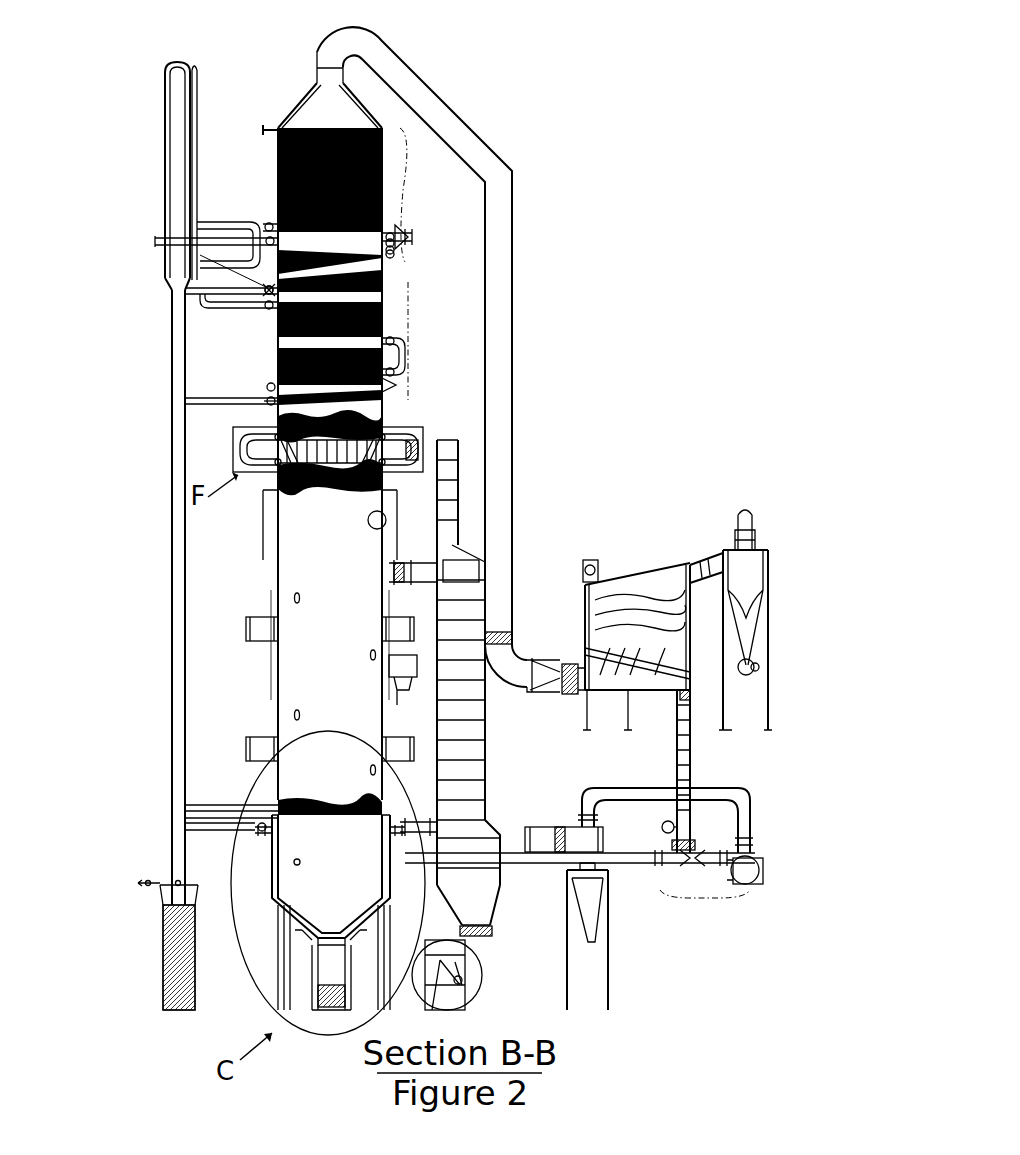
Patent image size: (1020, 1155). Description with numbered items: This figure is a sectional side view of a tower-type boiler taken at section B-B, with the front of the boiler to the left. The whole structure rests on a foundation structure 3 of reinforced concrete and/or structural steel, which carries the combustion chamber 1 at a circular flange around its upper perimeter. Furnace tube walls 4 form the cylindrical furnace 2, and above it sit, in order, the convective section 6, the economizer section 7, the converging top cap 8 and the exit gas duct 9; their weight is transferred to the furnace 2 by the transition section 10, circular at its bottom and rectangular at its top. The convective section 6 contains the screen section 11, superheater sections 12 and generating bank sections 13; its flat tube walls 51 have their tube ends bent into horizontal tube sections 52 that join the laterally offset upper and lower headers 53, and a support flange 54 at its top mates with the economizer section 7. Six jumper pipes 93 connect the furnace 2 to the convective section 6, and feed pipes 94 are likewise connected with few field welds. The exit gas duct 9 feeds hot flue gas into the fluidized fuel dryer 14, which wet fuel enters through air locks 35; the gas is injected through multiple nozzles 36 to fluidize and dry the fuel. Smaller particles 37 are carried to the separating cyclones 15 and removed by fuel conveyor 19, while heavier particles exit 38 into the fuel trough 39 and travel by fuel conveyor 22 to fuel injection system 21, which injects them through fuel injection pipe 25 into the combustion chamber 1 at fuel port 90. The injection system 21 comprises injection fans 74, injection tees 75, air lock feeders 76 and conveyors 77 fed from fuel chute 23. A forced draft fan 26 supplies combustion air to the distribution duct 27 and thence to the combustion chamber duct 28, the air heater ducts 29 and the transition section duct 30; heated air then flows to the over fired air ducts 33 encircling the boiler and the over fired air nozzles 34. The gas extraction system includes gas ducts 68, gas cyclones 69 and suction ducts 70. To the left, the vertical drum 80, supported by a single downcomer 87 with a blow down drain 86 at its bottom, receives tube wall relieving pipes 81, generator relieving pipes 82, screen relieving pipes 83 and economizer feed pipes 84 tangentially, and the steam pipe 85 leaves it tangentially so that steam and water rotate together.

The combustion chamber 1 is at (330, 870).
The cylindrical furnace chamber 2 is at (318, 656).
The foundation structure 3 is at (280, 965).
The furnace tube walls 4 is at (263, 545).
The convective section 6 is at (410, 335).
The economizer section 7 is at (405, 182).
The converging top cap 8 is at (400, 62).
The exit gas duct 9 is at (400, 237).
The transition section 10 is at (395, 430).
The screen section 11 is at (268, 392).
The superheater sections 12 is at (258, 308).
The generating bank sections 13 is at (393, 240).
The fluidized fuel dryer 14 is at (625, 580).
The separating cyclones 15 is at (746, 625).
The fuel conveyor 19 is at (754, 665).
The fuel injection system 21 is at (705, 911).
The fuel conveyor 22 is at (695, 675).
The fuel chute 23 is at (692, 780).
The fuel injection pipe 25 is at (500, 882).
The forced draft fan 26 is at (465, 988).
The distribution duct 27 is at (462, 775).
The combustion chamber duct 28 is at (415, 822).
The air heater ducts 29 is at (418, 568).
The transition section duct 30 is at (385, 452).
The over fired air ducts 33 is at (246, 628).
The over fired air nozzles 34 is at (402, 672).
The air locks 35 is at (591, 558).
The nozzles 36 is at (583, 628).
The smaller particles 37 is at (690, 572).
The exit 38 is at (692, 648).
The fuel trough 39 is at (692, 660).
The tube walls 51 is at (388, 252).
The horizontal tube sections 52 is at (265, 403).
The upper and lower headers 53 is at (268, 222).
The support flange 54 is at (392, 222).
The gas ducts 68 is at (552, 825).
The gas cyclones 69 is at (605, 895).
The suction ducts 70 is at (708, 800).
The injection fans 74 is at (762, 868).
The injection tees 75 is at (672, 865).
The air lock feeders 76 is at (695, 850).
The conveyors 77 is at (692, 830).
The vertical drum 80 is at (165, 75).
The tube wall relieving pipe 81 is at (225, 225).
The generator relieving pipe 82 is at (245, 243).
The screen relieving pipe 83 is at (405, 355).
The economizer feed pipe 84 is at (160, 241).
The steam pipe 85 is at (197, 75).
The blow down drain 86 is at (165, 925).
The single downcomer 87 is at (172, 520).
The fuel port 90 is at (255, 830).
The jumper pipes 93 is at (235, 468).
The feed pipes 94 is at (200, 400).